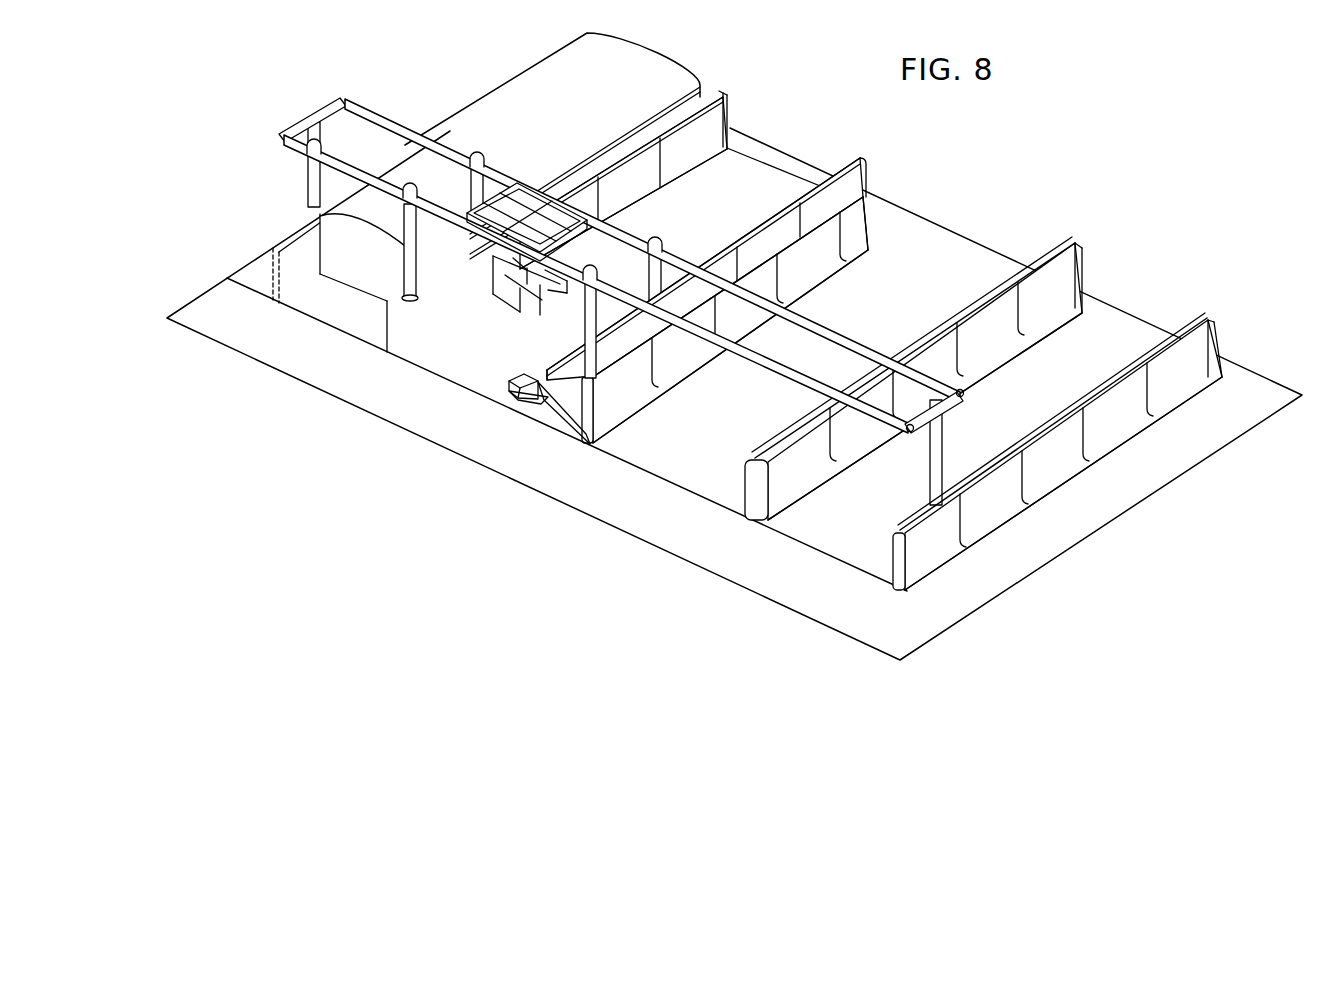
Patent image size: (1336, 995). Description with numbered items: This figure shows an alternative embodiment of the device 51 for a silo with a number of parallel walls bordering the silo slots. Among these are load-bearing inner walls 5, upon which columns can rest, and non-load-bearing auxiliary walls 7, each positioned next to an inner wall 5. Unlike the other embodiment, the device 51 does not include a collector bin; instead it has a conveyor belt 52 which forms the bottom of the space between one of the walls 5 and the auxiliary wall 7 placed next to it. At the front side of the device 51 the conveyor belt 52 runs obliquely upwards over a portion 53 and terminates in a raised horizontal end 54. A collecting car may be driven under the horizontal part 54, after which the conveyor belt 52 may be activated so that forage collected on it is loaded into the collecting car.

The inner wall 5 is at (892, 198).
The auxiliary wall 7 is at (858, 178).
The device 51 is at (734, 386).
The conveyor belt 52 is at (530, 384).
The portion 53 is at (565, 418).
The raised horizontal end 54 is at (523, 396).